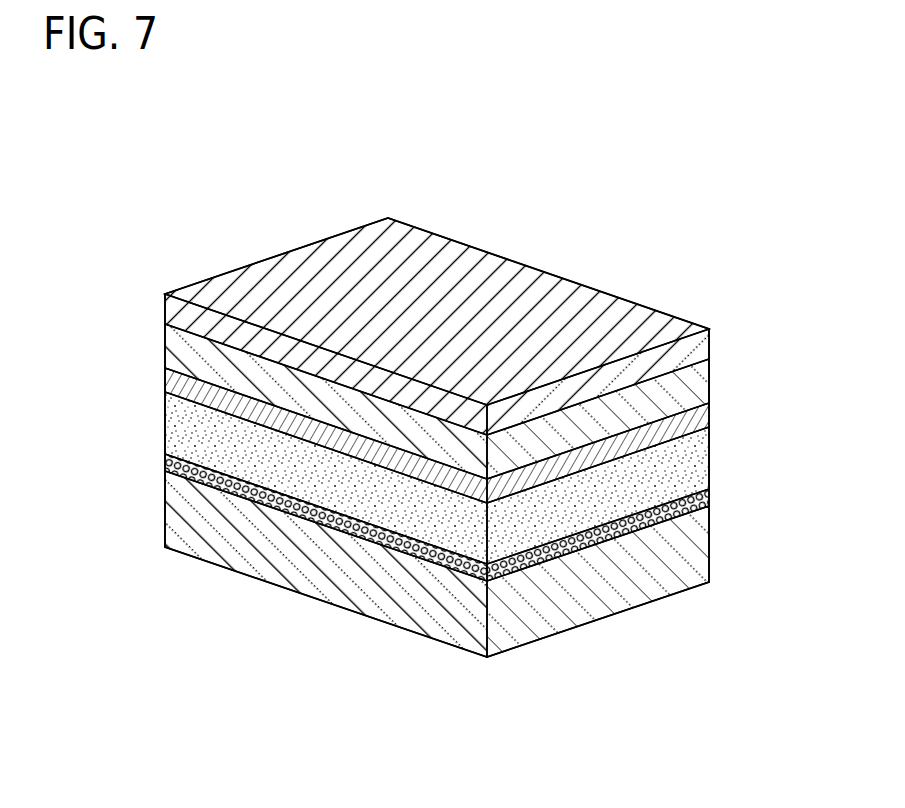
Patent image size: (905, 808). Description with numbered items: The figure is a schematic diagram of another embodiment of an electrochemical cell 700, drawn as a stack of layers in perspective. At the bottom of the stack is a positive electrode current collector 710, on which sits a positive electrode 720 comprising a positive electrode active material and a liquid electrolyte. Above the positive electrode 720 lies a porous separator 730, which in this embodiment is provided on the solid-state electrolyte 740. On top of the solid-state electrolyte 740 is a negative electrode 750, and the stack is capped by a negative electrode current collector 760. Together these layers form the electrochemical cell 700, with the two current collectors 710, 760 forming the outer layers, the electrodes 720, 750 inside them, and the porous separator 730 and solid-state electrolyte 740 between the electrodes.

The electrochemical cell 700 is at (152, 179).
The positive electrode current collector 710 is at (711, 582).
The positive electrode 720 is at (678, 518).
The porous separator 730 is at (711, 455).
The solid-state electrolyte 740 is at (711, 413).
The negative electrode 750 is at (711, 378).
The negative electrode current collector 760 is at (711, 329).